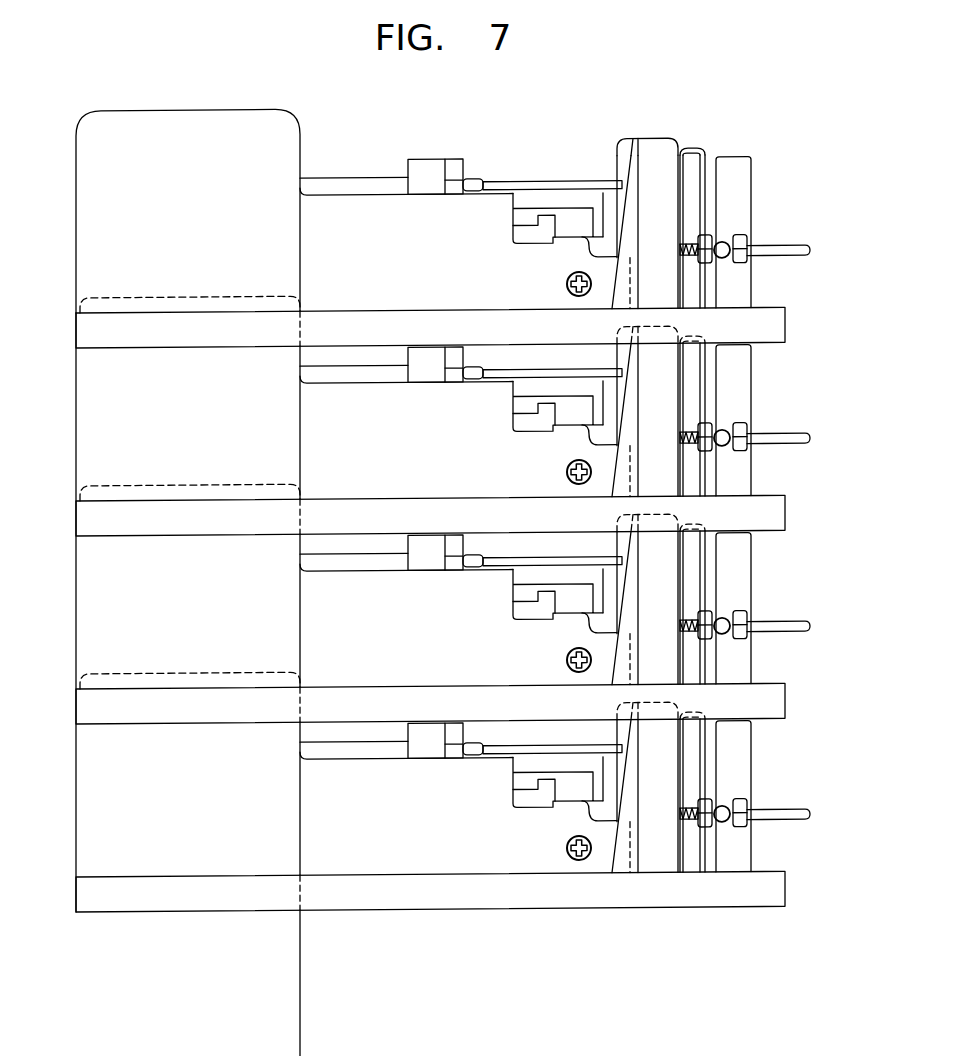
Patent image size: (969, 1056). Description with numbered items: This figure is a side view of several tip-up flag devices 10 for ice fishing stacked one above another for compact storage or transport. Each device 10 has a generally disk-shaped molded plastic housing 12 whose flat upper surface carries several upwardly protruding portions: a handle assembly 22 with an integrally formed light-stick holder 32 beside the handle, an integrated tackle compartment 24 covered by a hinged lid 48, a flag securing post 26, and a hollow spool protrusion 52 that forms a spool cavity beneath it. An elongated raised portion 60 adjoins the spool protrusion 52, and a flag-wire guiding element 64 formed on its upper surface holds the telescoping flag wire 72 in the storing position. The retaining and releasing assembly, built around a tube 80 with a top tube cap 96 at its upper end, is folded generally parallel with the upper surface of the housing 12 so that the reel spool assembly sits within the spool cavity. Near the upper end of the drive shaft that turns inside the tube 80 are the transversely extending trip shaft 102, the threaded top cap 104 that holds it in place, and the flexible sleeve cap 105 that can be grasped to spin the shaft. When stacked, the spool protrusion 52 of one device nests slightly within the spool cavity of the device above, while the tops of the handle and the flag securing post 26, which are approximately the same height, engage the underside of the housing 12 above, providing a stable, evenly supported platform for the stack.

The tip-up flag device 10 is at (66, 241).
The housing 12 is at (784, 330).
The handle assembly 22 is at (690, 156).
The tackle compartment 24 is at (515, 240).
The flag securing post 26 is at (612, 257).
The light-stick holder 32 is at (610, 204).
The lid 48 is at (515, 221).
The hollow spool protrusion 52 is at (185, 123).
The elongated raised portion 60 is at (330, 250).
The flag-wire guiding element 64 is at (420, 164).
The flag wire 72 is at (492, 184).
The tube 80 is at (633, 143).
The top tube cap 96 is at (570, 244).
The trip shaft 102 is at (727, 252).
The top cap 104 is at (741, 268).
The flexible sleeve cap 105 is at (770, 257).